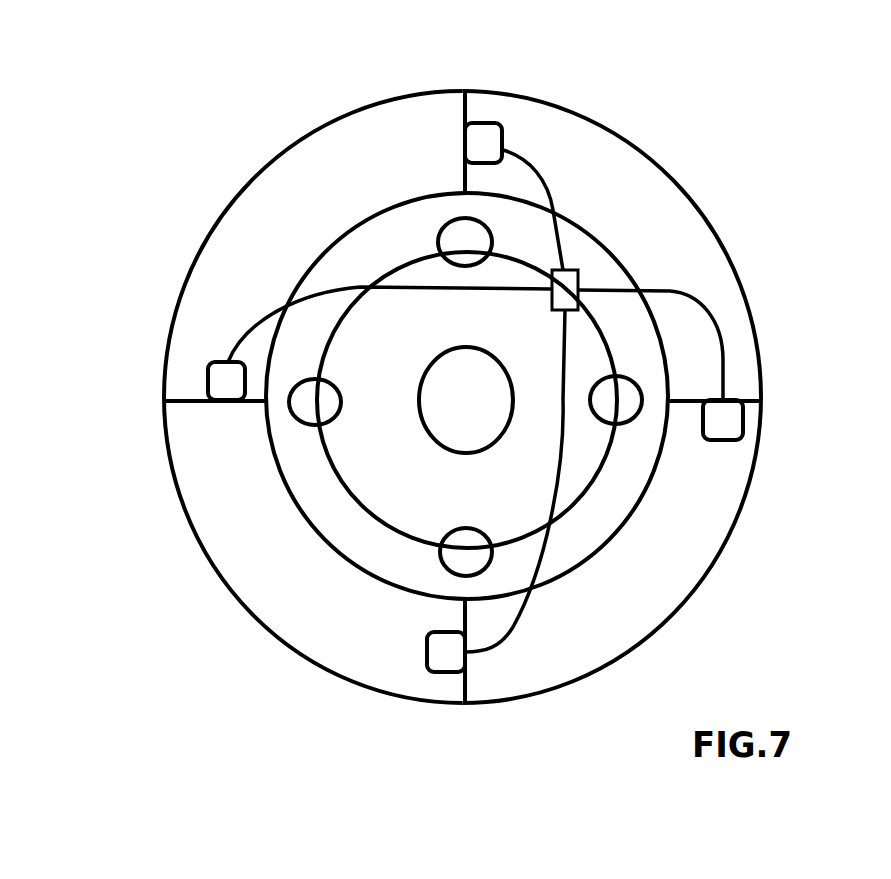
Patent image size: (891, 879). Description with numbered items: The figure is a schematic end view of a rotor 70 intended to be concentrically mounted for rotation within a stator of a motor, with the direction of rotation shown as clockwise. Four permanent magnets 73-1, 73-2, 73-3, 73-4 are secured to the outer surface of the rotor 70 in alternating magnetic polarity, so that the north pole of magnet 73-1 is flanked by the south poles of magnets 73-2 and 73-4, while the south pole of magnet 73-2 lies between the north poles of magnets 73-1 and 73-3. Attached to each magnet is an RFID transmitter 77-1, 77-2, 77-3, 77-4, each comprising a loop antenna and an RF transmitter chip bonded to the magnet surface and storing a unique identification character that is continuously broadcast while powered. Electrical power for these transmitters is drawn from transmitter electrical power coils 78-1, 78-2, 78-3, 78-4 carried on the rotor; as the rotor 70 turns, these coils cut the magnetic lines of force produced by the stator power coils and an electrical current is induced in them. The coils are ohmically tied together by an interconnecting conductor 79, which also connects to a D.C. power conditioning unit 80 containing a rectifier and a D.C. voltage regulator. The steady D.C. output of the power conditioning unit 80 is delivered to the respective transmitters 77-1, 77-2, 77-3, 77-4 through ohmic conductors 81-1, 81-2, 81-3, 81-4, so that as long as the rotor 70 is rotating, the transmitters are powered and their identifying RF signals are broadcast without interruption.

The rotor 70 is at (282, 137).
The permanent magnet 73-1 is at (245, 213).
The permanent magnet 73-2 is at (678, 232).
The permanent magnet 73-3 is at (628, 593).
The permanent magnet 73-4 is at (290, 600).
The RFID transmitter 77-1 is at (225, 387).
The RFID transmitter 77-2 is at (483, 137).
The RFID transmitter 77-3 is at (727, 417).
The RFID transmitter 77-4 is at (447, 663).
The transmitter electrical power coil 78-1 is at (462, 238).
The transmitter electrical power coil 78-2 is at (622, 405).
The transmitter electrical power coil 78-3 is at (483, 565).
The transmitter electrical power coil 78-4 is at (313, 413).
The interconnecting conductor 79 is at (327, 465).
The D.C. power conditioning unit 80 is at (577, 287).
The ohmic conductor 81-1 is at (257, 323).
The ohmic conductor 81-2 is at (553, 185).
The ohmic conductor 81-3 is at (720, 367).
The ohmic conductor 81-4 is at (552, 457).